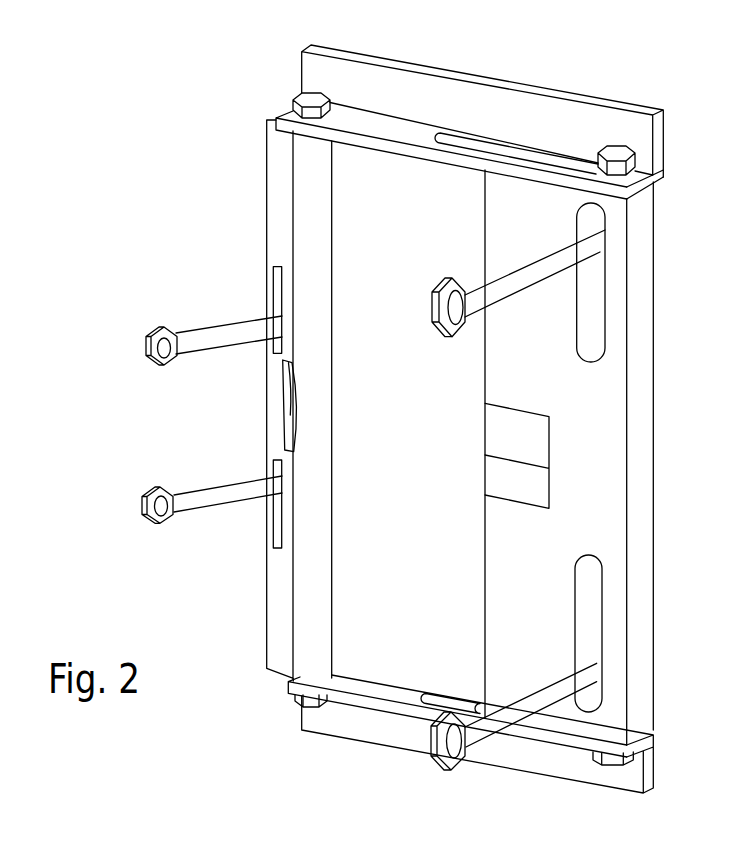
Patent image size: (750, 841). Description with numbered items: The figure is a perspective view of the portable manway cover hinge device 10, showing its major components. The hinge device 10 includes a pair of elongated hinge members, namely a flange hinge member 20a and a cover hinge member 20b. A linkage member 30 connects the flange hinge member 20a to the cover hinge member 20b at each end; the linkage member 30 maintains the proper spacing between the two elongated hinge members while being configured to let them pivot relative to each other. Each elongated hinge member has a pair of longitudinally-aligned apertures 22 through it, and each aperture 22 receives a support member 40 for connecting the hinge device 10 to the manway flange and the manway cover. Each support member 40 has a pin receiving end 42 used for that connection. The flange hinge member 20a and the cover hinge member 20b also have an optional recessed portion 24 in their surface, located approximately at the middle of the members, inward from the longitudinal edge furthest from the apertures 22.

The portable manway cover hinge device 10 is at (220, 122).
The flange hinge member 20a is at (265, 213).
The cover hinge member 20b is at (640, 370).
The longitudinally-aligned aperture 22 is at (587, 595).
The recessed portion 24 is at (292, 408).
The linkage member 30 is at (568, 90).
The support member 40 is at (183, 493).
The pin receiving end 42 is at (145, 345).